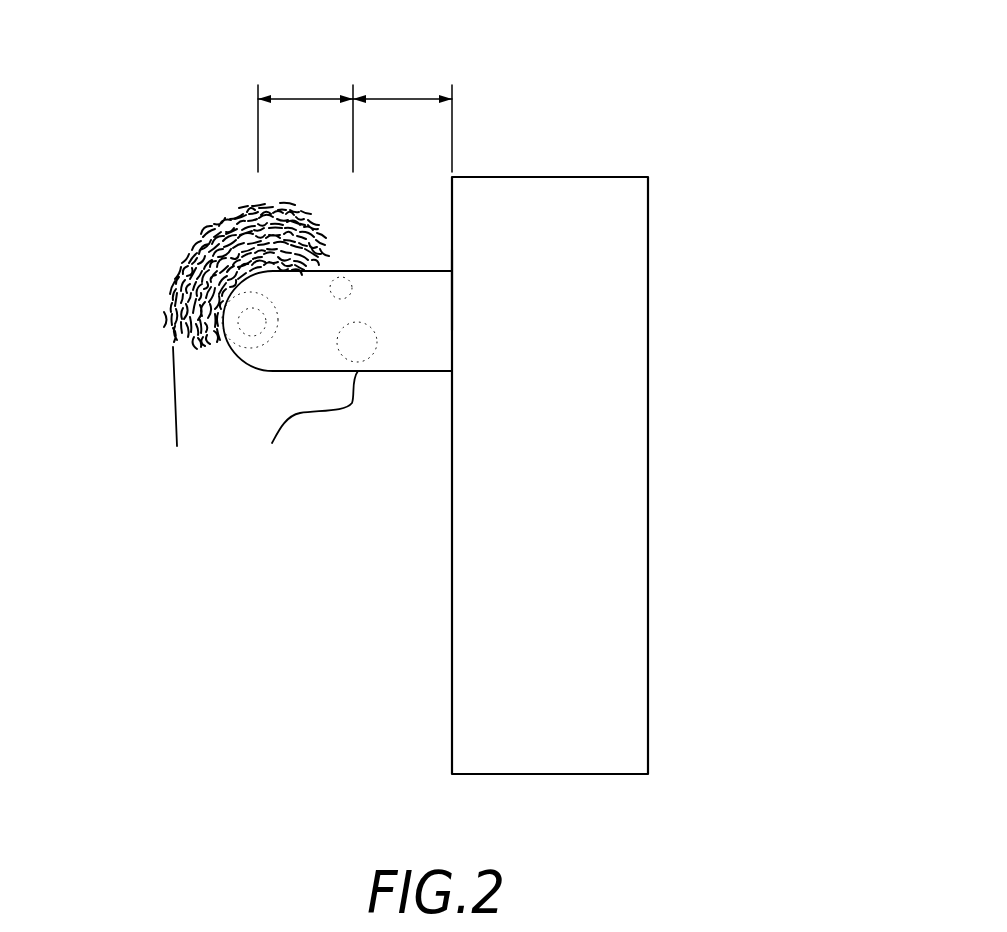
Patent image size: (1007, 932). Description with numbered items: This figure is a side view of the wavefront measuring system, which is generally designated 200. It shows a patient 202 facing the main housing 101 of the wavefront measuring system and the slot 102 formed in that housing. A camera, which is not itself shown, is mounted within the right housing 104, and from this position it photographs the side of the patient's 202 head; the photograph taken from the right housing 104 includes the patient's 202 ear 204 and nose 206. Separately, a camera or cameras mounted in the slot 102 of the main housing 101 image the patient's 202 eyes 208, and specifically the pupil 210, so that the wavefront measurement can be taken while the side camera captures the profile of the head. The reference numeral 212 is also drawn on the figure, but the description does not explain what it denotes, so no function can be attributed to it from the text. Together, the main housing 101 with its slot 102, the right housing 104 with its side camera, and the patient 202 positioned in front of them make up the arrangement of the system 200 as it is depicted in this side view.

The main housing 101 is at (617, 612).
The slot 102 is at (452, 318).
The right housing 104 is at (413, 337).
The wavefront measuring system 200 is at (758, 281).
The patient 202 is at (177, 413).
The ear 204 is at (240, 326).
The nose 206 is at (363, 328).
The eyes 208 is at (322, 298).
The pupil 210 is at (405, 99).
The tip length 212 is at (308, 99).